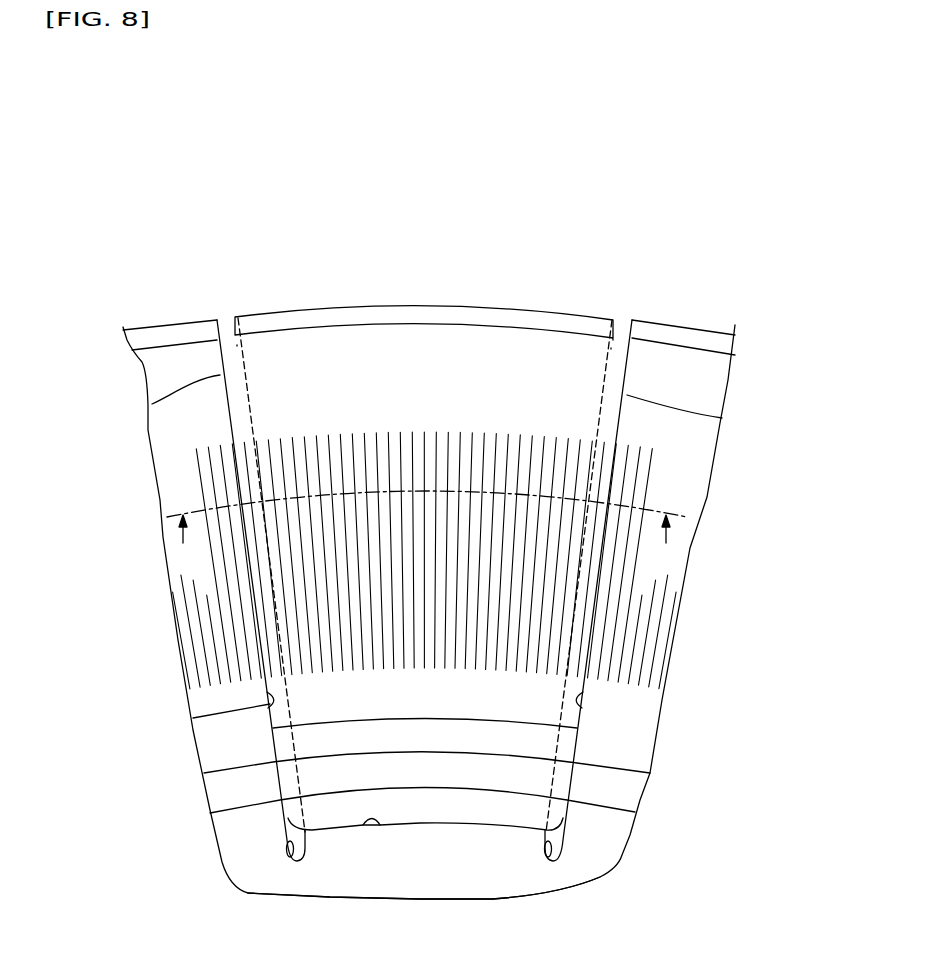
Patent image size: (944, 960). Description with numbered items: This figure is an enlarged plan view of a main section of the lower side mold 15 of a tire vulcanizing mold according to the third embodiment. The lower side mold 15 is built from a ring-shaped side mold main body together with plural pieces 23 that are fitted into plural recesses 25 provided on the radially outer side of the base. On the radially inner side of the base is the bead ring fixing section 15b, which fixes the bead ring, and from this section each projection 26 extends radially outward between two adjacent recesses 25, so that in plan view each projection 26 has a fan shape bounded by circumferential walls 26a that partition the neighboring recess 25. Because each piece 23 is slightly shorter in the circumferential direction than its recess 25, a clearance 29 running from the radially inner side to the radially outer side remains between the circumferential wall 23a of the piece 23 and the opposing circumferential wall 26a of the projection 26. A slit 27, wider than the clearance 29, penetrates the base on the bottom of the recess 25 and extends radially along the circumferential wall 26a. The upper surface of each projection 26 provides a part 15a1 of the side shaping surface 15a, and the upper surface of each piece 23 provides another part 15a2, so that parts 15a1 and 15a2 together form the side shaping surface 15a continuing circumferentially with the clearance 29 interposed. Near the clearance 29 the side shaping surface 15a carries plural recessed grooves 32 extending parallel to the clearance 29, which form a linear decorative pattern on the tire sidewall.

The lower side mold 15 is at (423, 90).
The side shaping surface 15a is at (449, 376).
The part of the side shaping surface 15a1 is at (177, 478).
The part of the side shaping surface 15a2 is at (371, 376).
The bead ring fixing section 15b is at (448, 865).
The piece 23 is at (489, 324).
The circumferential wall 23a is at (270, 722).
The recess 25 is at (378, 830).
The projection 26 is at (180, 343).
The circumferential wall 26a is at (193, 718).
The slit 27 is at (289, 866).
The clearance 29 is at (152, 404).
The recessed groove 32 is at (296, 443).